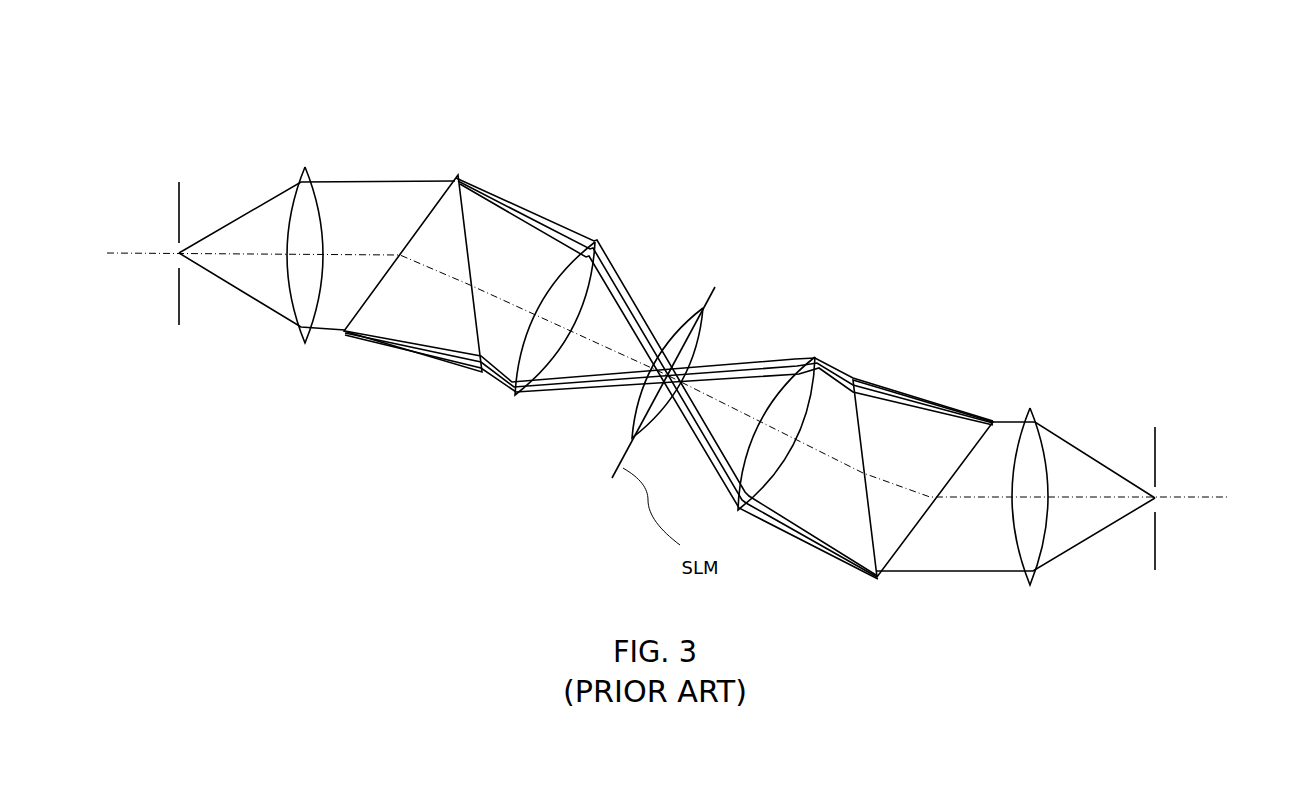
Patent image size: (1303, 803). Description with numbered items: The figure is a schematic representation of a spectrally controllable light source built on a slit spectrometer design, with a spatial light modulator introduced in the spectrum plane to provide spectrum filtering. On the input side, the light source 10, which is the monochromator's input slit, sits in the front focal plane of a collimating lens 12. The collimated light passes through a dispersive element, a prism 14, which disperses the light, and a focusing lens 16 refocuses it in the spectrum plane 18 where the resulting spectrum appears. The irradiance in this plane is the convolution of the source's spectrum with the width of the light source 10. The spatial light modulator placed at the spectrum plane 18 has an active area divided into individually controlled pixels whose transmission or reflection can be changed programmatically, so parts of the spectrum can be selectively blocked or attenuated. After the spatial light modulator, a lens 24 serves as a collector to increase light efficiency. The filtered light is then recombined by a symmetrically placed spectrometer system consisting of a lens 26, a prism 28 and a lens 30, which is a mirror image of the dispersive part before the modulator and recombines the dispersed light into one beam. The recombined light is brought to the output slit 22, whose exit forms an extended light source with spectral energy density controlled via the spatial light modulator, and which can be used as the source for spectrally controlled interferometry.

The light source 10 is at (175, 245).
The collimating lens 12 is at (305, 167).
The prism 14 is at (458, 175).
The focusing lens 16 is at (595, 243).
The spectrum plane 18 is at (624, 451).
The output slit 22 is at (1158, 487).
The lens 24 is at (705, 327).
The lens 26 is at (823, 353).
The prism 28 is at (930, 393).
The lens 30 is at (1035, 408).